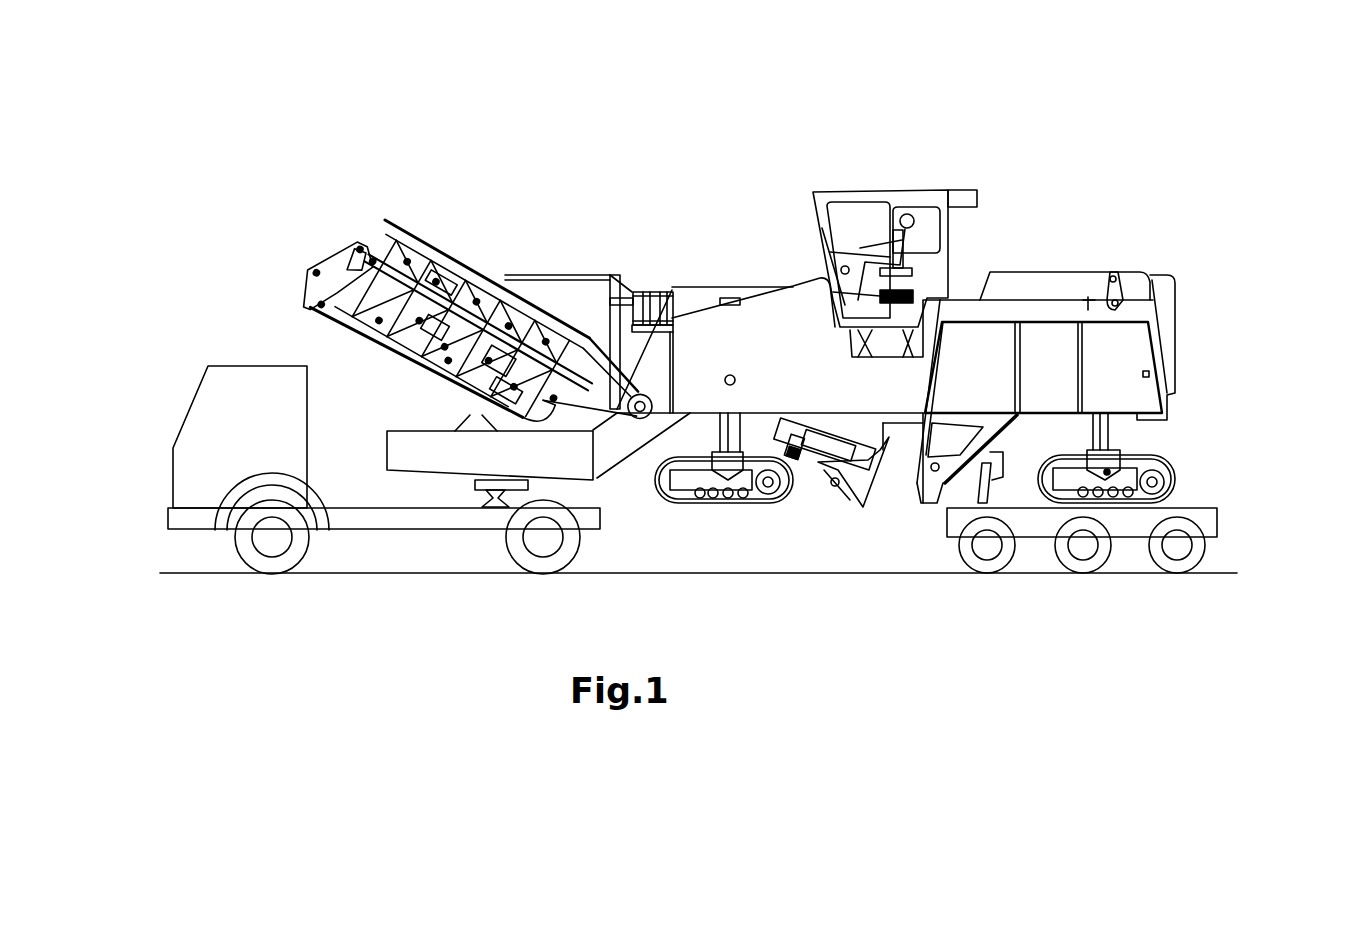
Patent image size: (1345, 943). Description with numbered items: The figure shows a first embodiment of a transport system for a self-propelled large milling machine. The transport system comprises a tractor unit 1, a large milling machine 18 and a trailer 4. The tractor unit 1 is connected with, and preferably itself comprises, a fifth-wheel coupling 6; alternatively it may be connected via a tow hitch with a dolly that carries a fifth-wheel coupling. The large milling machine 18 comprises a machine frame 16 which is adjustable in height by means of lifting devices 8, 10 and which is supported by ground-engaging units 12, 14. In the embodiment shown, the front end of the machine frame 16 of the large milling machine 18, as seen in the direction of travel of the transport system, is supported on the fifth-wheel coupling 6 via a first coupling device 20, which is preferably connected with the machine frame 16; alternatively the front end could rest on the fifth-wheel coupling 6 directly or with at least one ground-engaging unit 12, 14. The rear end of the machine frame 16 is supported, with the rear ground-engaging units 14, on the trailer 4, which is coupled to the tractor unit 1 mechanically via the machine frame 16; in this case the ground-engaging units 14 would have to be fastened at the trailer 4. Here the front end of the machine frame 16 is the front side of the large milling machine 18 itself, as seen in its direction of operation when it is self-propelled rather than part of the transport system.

The tractor unit 1 is at (198, 310).
The trailer 4 is at (1244, 520).
The fifth-wheel coupling 6 is at (486, 521).
The lifting device 8 is at (657, 446).
The lifting device 10 is at (1113, 438).
The ground-engaging unit 12 is at (729, 505).
The ground-engaging unit 14 is at (1183, 480).
The machine frame 16 is at (1088, 270).
The large milling machine 18 is at (1212, 214).
The first coupling device 20 is at (477, 455).